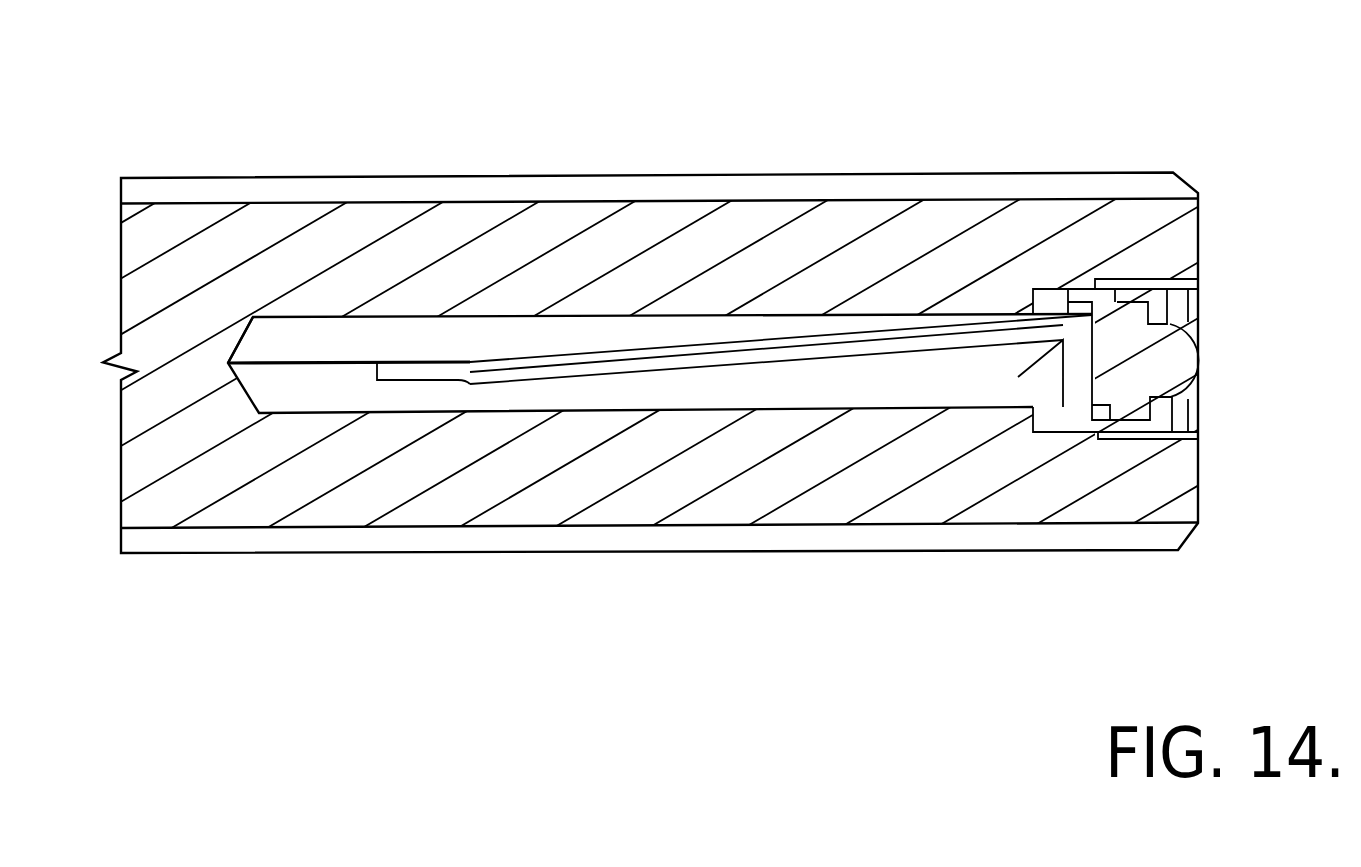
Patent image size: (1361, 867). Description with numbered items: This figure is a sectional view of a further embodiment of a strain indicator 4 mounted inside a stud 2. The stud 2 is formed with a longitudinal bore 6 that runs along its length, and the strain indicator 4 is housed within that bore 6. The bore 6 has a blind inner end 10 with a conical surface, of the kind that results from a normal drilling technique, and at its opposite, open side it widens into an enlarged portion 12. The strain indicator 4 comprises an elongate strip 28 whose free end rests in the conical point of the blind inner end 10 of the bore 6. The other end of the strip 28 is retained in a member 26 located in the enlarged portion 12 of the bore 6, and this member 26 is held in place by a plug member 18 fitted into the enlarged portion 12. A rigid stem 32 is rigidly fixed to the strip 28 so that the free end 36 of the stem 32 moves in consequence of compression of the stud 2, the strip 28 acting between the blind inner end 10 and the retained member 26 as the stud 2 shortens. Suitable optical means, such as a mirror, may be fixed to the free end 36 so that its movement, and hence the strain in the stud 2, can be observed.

The stud 2 is at (760, 228).
The strain indicator 4 is at (1212, 208).
The longitudinal bore 6 is at (521, 313).
The blind inner end 10 is at (250, 322).
The enlarged portion 12 is at (1163, 441).
The plug member 18 is at (1188, 308).
The member 26 is at (1075, 381).
The elongate strip 28 is at (317, 366).
The rigid stem 32 is at (707, 362).
The free end 36 is at (1018, 377).